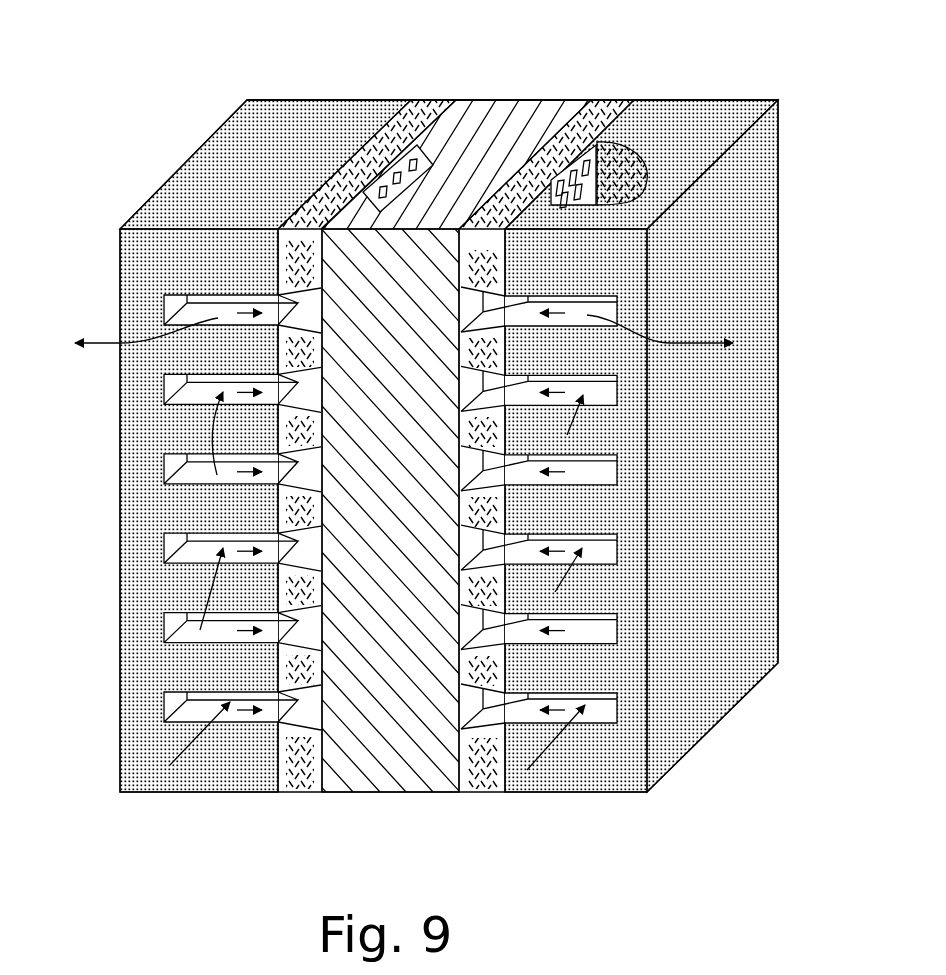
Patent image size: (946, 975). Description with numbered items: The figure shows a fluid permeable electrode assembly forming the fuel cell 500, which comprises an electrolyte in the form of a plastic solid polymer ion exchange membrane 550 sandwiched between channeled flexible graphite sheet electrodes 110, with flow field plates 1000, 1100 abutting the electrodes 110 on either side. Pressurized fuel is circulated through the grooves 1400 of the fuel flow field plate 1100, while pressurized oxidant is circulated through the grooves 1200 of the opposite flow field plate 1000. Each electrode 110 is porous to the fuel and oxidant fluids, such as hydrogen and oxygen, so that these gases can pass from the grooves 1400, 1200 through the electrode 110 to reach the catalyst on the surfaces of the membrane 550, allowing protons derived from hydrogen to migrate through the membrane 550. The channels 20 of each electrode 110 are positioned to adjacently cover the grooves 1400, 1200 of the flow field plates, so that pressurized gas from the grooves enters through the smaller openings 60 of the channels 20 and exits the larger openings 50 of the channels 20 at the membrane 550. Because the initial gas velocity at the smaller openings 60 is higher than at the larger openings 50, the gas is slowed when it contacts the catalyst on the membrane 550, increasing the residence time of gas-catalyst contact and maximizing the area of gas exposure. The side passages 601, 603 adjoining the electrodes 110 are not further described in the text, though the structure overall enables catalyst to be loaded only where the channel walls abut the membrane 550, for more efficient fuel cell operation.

The fuel cell 500 is at (613, 88).
The fuel flow field plate 1100 is at (182, 170).
The flow field plate 1000 is at (760, 235).
The channeled flexible graphite sheet electrode 110 is at (470, 152).
The solid polymer ion exchange membrane 550 is at (523, 100).
The larger openings 50 is at (365, 165).
The first side channel 601 is at (320, 793).
The second side channel 603 is at (450, 765).
The grooves of fuel flow field plate 1400 is at (187, 703).
The grooves 1200 is at (613, 640).
The channels 20 is at (425, 158).
The smaller openings 60 is at (593, 207).